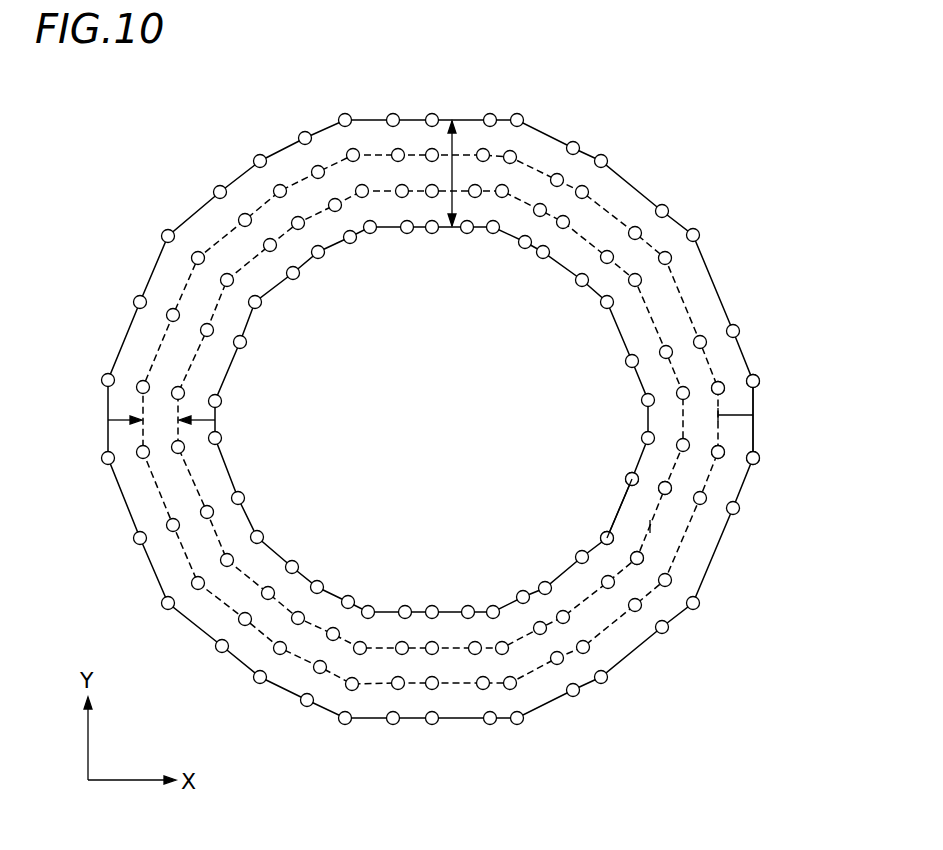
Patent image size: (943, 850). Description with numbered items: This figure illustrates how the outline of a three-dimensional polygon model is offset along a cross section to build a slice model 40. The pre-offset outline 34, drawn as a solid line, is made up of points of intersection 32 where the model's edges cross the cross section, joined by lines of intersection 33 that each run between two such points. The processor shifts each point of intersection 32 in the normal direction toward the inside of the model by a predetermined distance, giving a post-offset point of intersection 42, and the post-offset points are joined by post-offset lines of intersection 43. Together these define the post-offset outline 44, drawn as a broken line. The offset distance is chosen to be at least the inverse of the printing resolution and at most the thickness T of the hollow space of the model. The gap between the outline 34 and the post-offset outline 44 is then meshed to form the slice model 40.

The slice model 40 is at (468, 379).
The outline 34 is at (622, 316).
The post-offset outline 44 is at (597, 236).
The point of intersection 32 is at (760, 381).
The post-offset point of intersection 42 is at (724, 385).
The line of intersection 33 is at (754, 433).
The post-offset line of intersection 43 is at (755, 415).
The thickness of the hollow space T is at (452, 172).